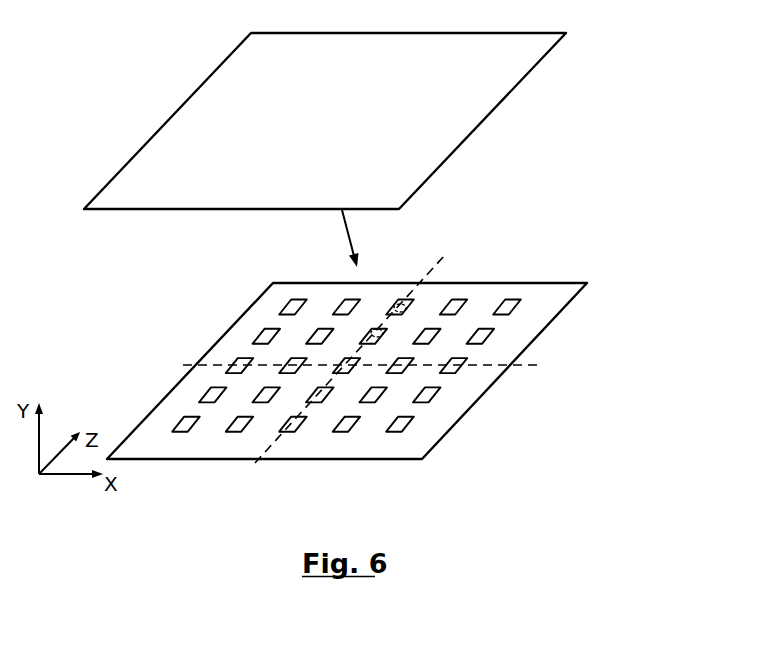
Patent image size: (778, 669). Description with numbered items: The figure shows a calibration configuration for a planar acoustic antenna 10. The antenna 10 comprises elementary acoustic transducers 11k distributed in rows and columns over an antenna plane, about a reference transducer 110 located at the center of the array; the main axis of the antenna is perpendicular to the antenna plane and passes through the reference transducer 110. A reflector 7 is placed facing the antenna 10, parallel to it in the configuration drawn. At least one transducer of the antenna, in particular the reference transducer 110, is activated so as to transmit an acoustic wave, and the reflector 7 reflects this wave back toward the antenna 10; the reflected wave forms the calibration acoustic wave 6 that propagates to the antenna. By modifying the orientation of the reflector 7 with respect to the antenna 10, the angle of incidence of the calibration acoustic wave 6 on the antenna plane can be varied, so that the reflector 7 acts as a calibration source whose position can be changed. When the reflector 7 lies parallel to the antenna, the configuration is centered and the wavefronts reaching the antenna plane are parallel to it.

The reflector 7 is at (541, 40).
The calibration acoustic wave 6 is at (373, 254).
The planar acoustic antenna 10 is at (366, 375).
The elementary acoustic transducer 11k is at (244, 404).
The reference transducer 110 is at (348, 384).